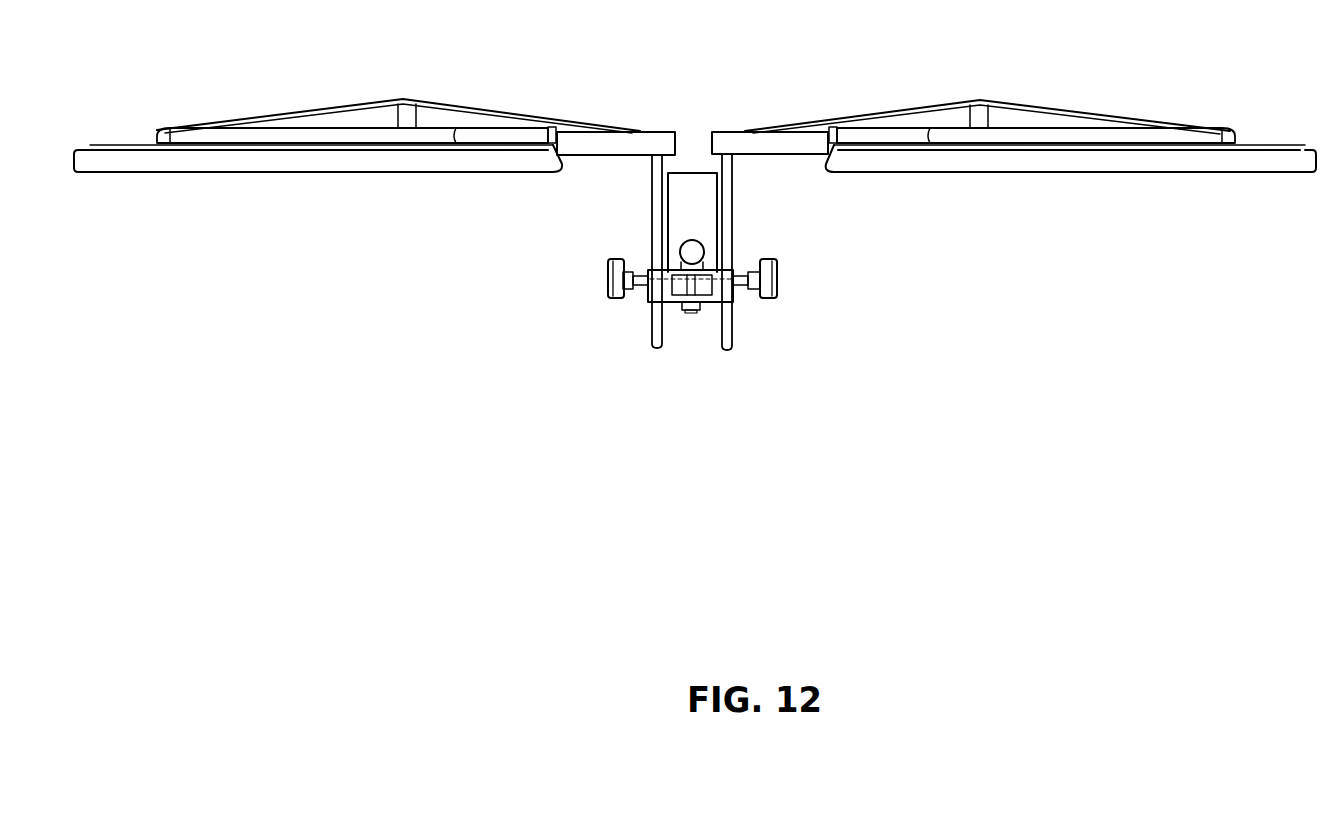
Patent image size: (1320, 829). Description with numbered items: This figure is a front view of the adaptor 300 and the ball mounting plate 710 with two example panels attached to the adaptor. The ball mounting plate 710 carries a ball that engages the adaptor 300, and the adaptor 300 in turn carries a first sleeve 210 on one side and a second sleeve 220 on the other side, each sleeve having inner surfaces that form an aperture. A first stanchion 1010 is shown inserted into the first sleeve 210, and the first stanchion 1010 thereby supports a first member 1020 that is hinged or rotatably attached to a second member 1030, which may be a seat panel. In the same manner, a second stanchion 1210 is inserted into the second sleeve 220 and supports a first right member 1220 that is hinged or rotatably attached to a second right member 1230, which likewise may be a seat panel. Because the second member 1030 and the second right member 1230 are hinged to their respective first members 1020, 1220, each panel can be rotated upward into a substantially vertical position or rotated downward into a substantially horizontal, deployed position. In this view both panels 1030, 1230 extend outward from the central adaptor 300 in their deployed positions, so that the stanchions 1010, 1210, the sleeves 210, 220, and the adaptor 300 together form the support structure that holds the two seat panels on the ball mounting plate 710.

The first sleeve 210 is at (374, 218).
The second sleeve 220 is at (1014, 245).
The adaptor 300 is at (632, 341).
The ball mounting plate 710 is at (687, 218).
The first stanchion 1010 is at (653, 190).
The first member 1020 is at (607, 143).
The second member 1030 is at (337, 165).
The second stanchion 1210 is at (723, 197).
The first right member 1220 is at (798, 147).
The second right member 1230 is at (1025, 160).